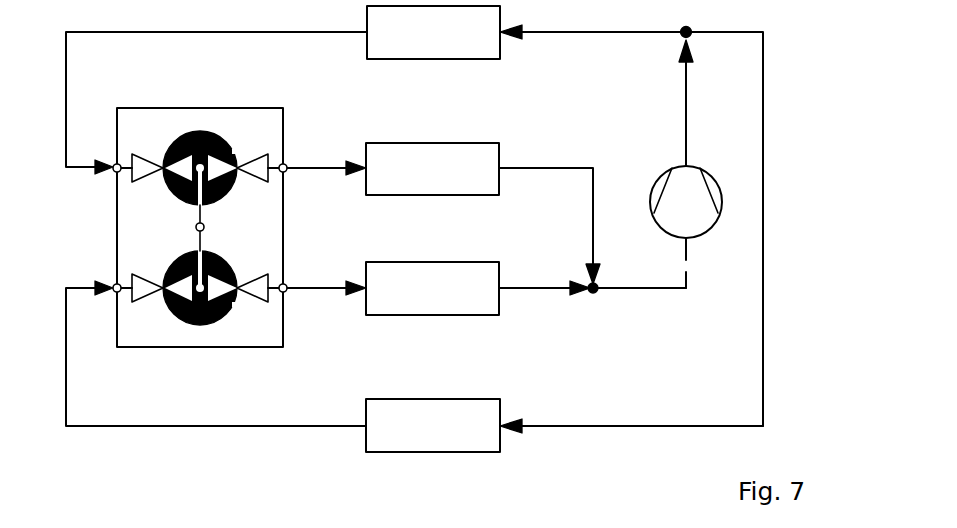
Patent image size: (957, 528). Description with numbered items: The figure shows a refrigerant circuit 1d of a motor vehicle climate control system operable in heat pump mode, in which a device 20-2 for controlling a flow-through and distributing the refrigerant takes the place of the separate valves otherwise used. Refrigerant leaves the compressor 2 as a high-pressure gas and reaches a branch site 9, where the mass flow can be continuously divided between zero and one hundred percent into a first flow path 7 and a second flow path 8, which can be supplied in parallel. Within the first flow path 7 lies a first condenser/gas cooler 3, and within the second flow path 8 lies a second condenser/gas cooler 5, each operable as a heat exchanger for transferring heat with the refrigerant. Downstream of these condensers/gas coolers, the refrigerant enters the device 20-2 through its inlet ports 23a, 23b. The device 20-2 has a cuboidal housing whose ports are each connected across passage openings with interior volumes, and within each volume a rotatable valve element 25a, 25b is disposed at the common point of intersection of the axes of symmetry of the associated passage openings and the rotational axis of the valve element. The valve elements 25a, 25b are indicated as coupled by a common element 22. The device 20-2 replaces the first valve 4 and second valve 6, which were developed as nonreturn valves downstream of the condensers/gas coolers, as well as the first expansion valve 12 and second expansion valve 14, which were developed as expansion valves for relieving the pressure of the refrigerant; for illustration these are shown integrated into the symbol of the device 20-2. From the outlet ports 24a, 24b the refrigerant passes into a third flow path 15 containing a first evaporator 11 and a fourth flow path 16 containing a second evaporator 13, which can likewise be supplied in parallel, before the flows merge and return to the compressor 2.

The refrigerant circuit 1d is at (802, 97).
The compressor 2 is at (691, 217).
The first condenser/gas cooler 3 is at (433, 32).
The first valve 4 is at (139, 160).
The second condenser/gas cooler 5 is at (433, 425).
The second valve 6 is at (140, 297).
The first flow path 7 is at (600, 33).
The second flow path 8 is at (665, 423).
The branch site 9 is at (688, 35).
The first evaporator 11 is at (432, 169).
The first expansion valve 12 is at (262, 157).
The second evaporator 13 is at (432, 288).
The second expansion valve 14 is at (262, 299).
The third flow path 15 is at (538, 166).
The fourth flow path 16 is at (538, 286).
The device for controlling a flow-through and distributing the refrigerant 20-2 is at (92, 213).
The coupling rod / actuator 22 is at (196, 228).
The second port 23a is at (114, 170).
The second port 23b is at (114, 287).
The third port 24a is at (286, 171).
The third port 24b is at (286, 285).
The first valve element 25a is at (219, 141).
The second valve element 25b is at (223, 318).